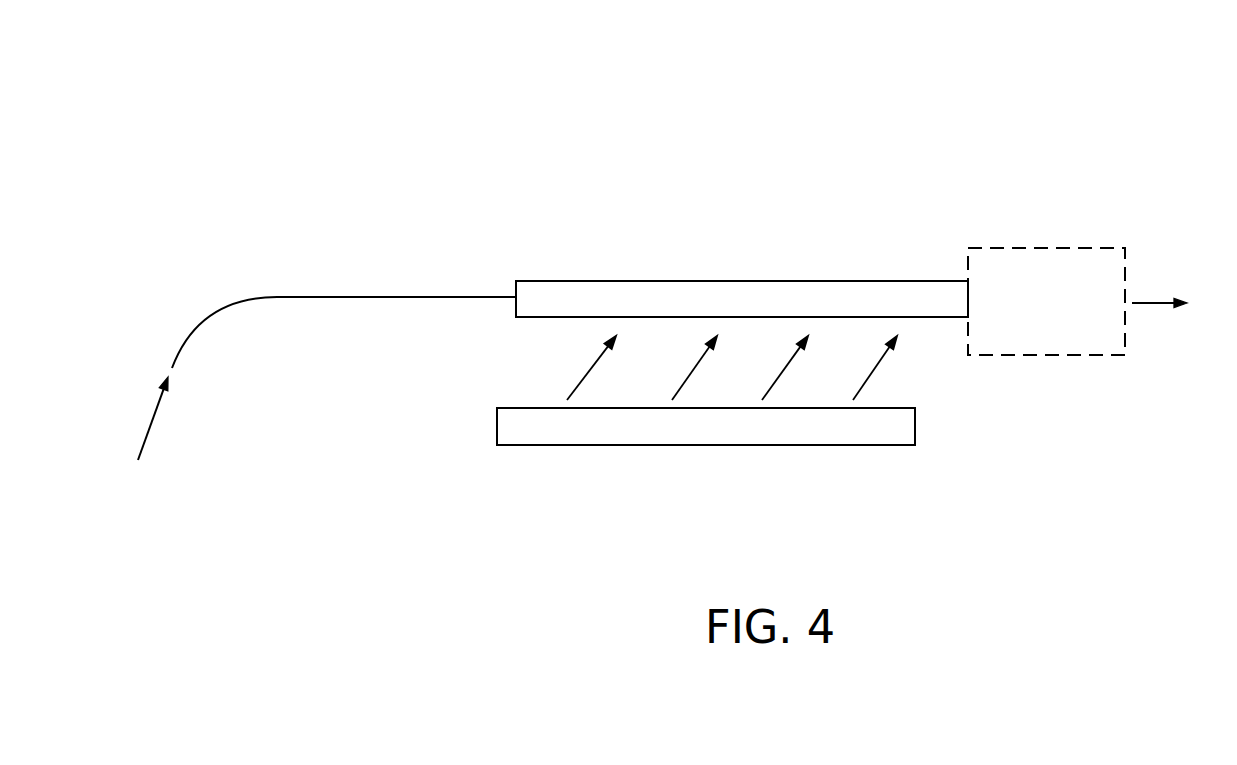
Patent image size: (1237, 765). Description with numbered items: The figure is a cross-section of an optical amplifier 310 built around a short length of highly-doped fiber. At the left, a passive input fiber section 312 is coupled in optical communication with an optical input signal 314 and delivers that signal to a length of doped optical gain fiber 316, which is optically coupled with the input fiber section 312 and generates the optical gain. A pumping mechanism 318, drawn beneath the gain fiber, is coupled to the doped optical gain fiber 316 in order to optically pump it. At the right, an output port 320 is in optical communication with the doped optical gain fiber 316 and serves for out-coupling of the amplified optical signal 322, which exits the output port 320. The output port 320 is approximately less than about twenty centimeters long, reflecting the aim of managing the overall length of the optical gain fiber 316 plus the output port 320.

The optical amplifier 310 is at (935, 58).
The input fiber section 312 is at (353, 327).
The optical input signal 314 is at (180, 430).
The doped optical gain fiber 316 is at (936, 346).
The pumping mechanism 318 is at (813, 445).
The output port 320 is at (1060, 248).
The amplified optical signal 322 is at (1153, 315).